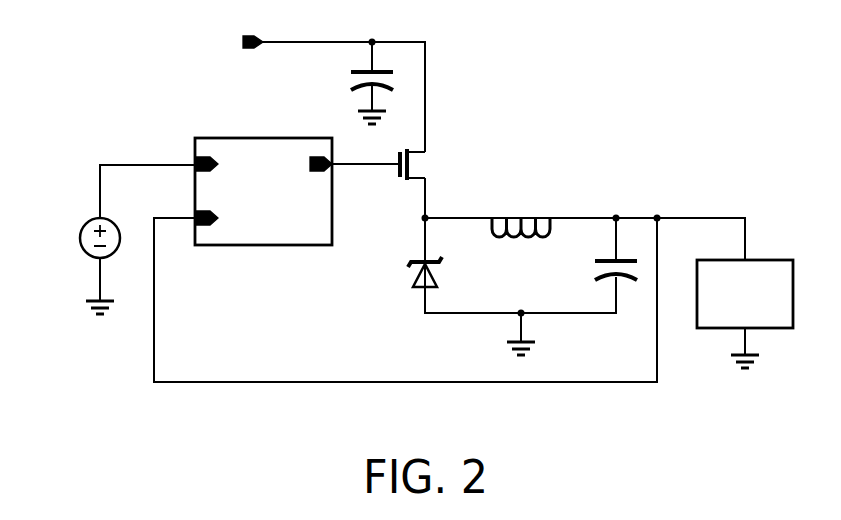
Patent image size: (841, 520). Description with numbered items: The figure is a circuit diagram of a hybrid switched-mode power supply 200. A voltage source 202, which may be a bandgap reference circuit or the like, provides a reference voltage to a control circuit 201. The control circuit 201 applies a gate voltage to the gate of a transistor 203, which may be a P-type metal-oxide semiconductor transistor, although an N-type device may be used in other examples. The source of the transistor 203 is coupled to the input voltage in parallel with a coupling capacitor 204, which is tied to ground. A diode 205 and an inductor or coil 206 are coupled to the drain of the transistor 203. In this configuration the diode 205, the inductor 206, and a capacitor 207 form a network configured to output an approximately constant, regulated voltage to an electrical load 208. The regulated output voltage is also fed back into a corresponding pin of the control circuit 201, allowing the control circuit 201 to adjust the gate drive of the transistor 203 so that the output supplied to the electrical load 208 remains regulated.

The hybrid SMPS 200 is at (589, 59).
The control circuit 201 is at (230, 138).
The voltage source 202 is at (83, 232).
The transistor 203 is at (412, 163).
The coupling capacitor 204 is at (349, 71).
The diode 205 is at (413, 277).
The inductor 206 is at (536, 217).
The capacitor 207 is at (594, 264).
The electrical load 208 is at (786, 260).